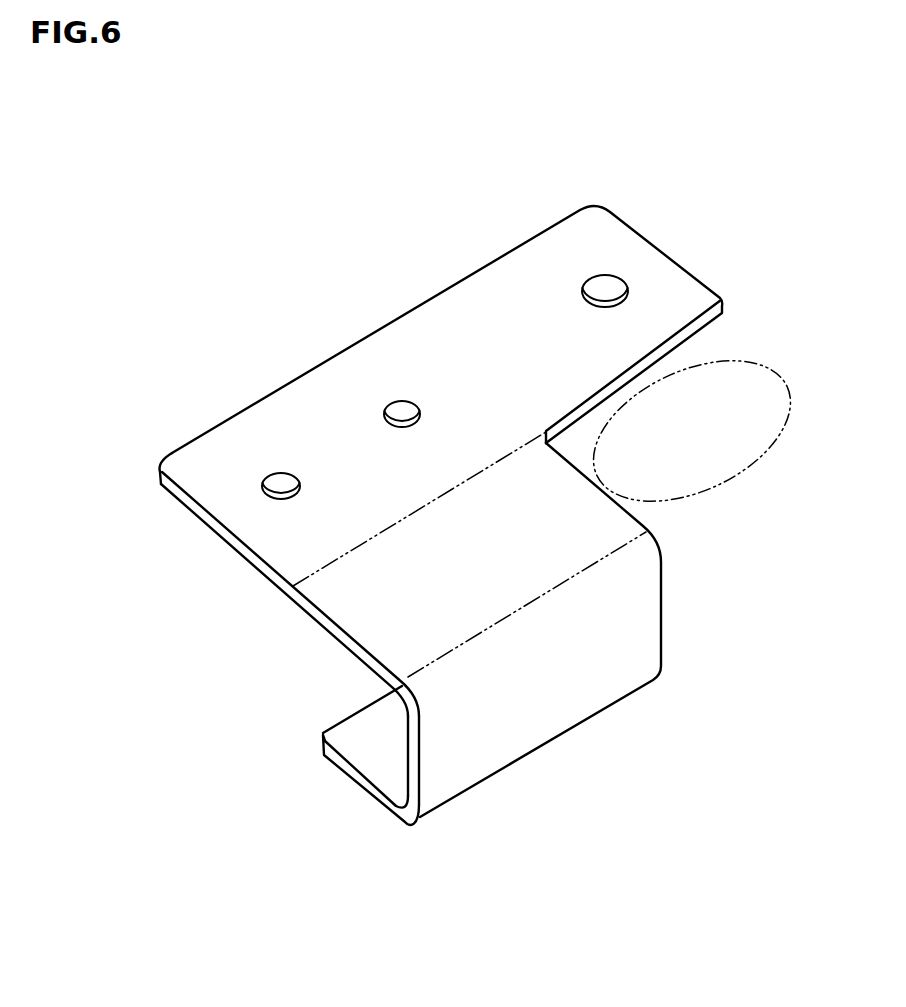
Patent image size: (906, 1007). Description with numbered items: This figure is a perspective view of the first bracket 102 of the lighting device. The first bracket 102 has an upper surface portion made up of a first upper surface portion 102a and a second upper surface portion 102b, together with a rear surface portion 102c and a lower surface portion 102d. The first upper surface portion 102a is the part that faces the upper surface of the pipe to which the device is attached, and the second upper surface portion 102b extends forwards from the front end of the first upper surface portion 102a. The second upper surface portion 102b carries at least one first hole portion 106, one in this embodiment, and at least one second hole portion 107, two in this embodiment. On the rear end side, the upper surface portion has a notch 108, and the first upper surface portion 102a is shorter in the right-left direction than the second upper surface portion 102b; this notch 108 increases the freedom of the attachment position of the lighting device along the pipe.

The first bracket 102 is at (421, 138).
The first upper surface portion 102a is at (373, 603).
The second upper surface portion 102b is at (248, 518).
The rear surface portion 102c is at (622, 640).
The lower surface portion 102d is at (372, 753).
The first hole portion 106 is at (605, 291).
The second hole portion 107 is at (400, 418).
The notch 108 is at (691, 431).